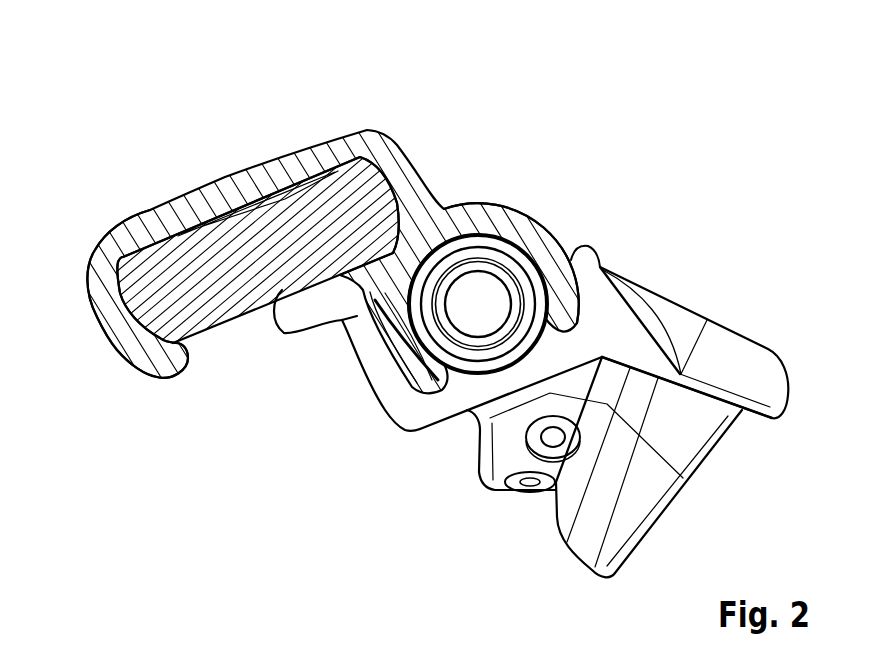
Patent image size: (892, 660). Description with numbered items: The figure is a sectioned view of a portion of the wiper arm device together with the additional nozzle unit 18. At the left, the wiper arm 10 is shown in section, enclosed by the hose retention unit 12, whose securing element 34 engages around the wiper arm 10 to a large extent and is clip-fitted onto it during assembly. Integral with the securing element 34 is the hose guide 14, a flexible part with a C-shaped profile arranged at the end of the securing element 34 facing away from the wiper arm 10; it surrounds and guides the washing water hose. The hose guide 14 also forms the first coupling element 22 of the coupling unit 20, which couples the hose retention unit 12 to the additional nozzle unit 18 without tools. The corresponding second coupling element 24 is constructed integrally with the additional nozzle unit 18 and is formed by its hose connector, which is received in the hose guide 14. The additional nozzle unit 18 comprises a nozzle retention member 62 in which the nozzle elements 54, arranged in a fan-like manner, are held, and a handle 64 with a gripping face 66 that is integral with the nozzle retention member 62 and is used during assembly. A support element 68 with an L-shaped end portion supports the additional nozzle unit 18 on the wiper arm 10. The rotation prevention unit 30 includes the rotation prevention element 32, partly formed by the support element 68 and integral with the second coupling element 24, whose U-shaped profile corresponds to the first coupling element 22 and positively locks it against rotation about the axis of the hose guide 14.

The wiper arm 10 is at (147, 315).
The hose retention unit 12 is at (413, 101).
The hose guide 14 is at (488, 215).
The additional nozzle unit 18 is at (774, 269).
The coupling unit 20 is at (547, 199).
The first coupling element 22 is at (381, 334).
The second coupling element 24 is at (444, 353).
The rotation prevention unit 30 is at (363, 437).
The rotation prevention element 32 is at (407, 413).
The securing element 34 is at (118, 243).
The nozzle element 54 is at (517, 491).
The nozzle retention member 62 is at (603, 465).
The handle 64 is at (624, 263).
The gripping face 66 is at (672, 312).
The support element 68 is at (307, 330).